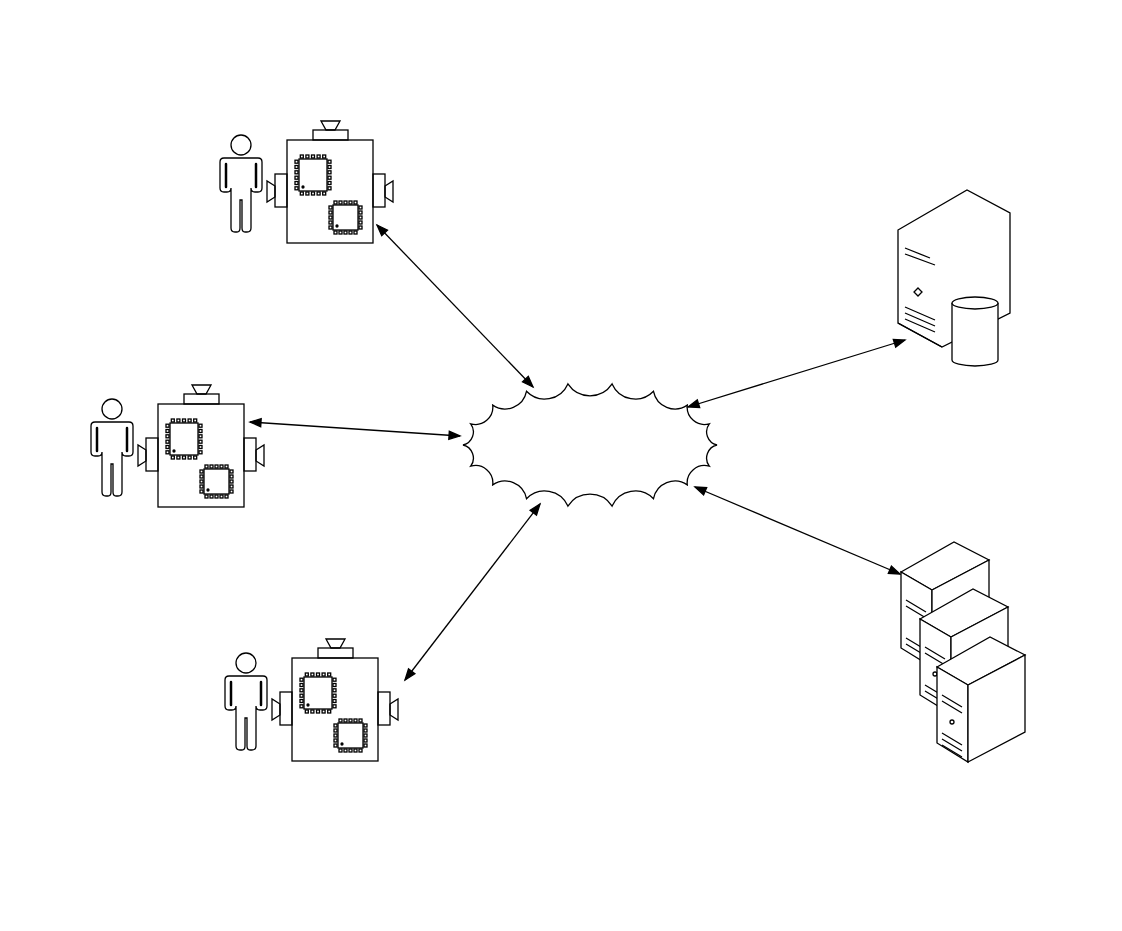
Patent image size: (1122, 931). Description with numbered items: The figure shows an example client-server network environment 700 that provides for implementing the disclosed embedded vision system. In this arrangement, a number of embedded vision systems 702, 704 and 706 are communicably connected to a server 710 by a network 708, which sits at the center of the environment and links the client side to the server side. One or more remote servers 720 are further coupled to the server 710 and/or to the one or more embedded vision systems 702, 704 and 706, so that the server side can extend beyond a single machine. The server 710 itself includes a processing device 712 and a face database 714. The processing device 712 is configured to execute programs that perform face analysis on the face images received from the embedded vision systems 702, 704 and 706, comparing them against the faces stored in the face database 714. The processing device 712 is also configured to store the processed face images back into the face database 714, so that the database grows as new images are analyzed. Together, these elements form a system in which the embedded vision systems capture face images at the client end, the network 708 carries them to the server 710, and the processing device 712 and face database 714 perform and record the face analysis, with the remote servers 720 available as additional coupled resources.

The network environment 700 is at (860, 45).
The embedded vision system 702 is at (324, 166).
The embedded vision system 704 is at (193, 429).
The embedded vision system 706 is at (329, 685).
The network 708 is at (590, 428).
The server 710 is at (896, 370).
The processing device 712 is at (985, 273).
The face database 714 is at (1000, 360).
The remote servers 720 is at (895, 736).